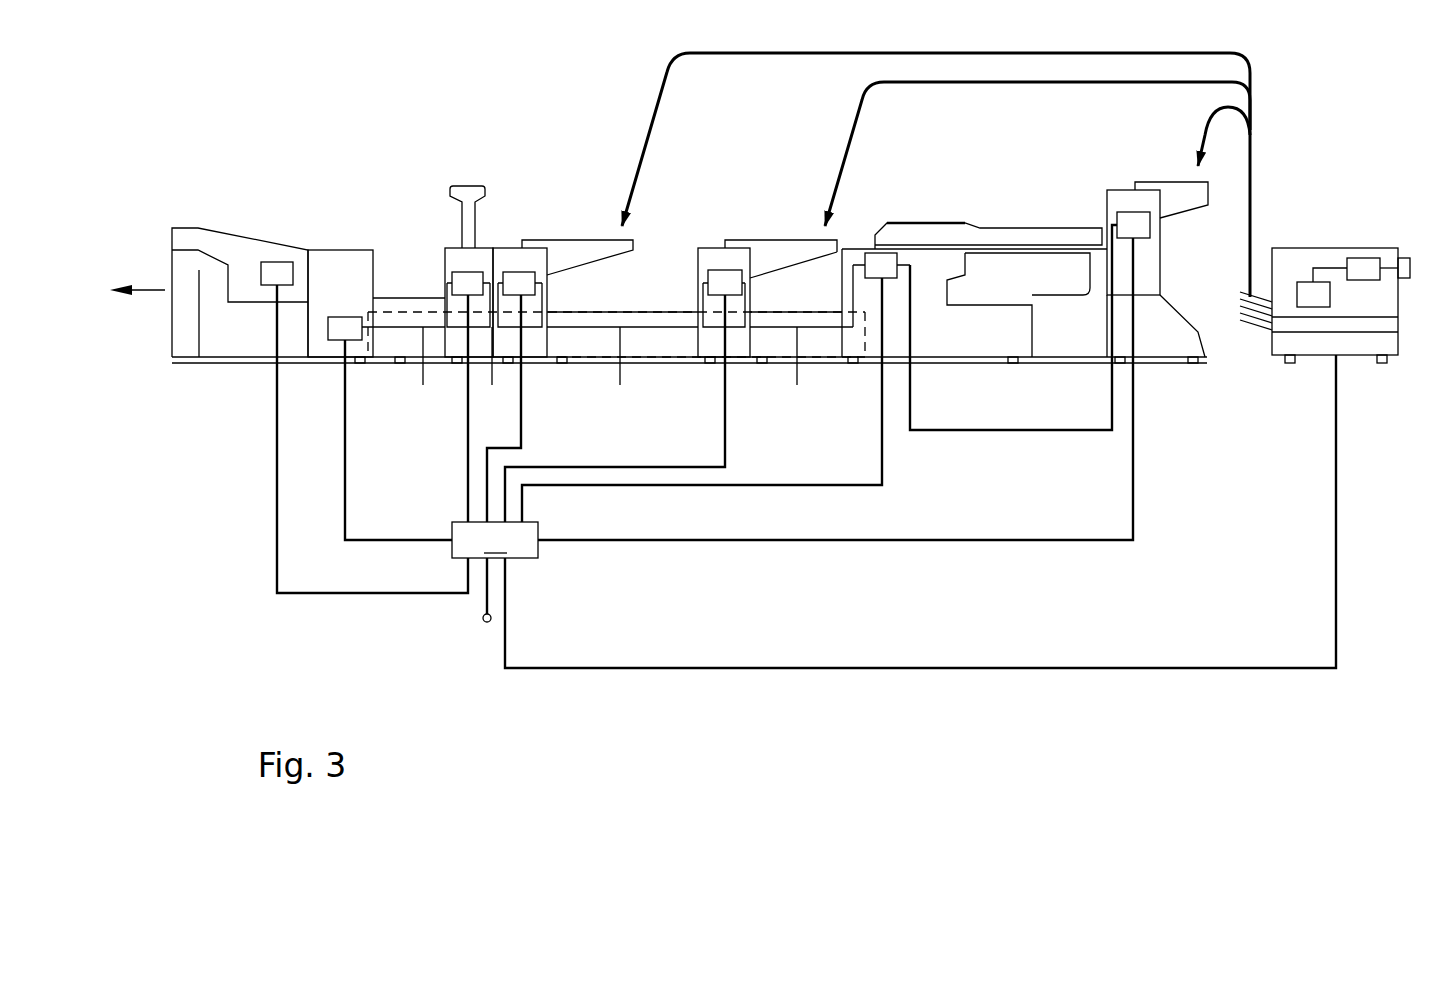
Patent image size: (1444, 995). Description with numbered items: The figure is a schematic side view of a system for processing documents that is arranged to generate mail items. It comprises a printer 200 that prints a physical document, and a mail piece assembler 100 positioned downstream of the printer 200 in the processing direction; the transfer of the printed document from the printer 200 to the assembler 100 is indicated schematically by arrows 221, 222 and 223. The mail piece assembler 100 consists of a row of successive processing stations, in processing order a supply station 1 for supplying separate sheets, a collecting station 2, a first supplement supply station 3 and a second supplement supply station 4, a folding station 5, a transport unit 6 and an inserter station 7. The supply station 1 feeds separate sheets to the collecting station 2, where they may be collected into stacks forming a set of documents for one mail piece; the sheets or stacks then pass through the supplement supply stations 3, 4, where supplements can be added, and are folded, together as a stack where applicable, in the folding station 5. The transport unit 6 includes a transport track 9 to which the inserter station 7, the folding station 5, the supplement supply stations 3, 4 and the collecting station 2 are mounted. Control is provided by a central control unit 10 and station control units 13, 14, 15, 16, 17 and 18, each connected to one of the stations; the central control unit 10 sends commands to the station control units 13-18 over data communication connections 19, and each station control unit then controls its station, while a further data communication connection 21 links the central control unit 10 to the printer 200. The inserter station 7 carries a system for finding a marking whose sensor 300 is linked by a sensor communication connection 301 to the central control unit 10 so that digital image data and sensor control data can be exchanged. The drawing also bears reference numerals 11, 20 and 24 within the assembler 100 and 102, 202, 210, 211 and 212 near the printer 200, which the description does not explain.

The supply station 1 is at (1119, 187).
The collecting station 2 is at (1006, 222).
The first supplement supply station 3 is at (714, 245).
The second supplement supply station 4 is at (511, 239).
The folding station 5 is at (491, 239).
The transport unit 6 is at (404, 295).
The inserter station 7 is at (251, 231).
The transport track 9 is at (385, 310).
The central control unit 10 is at (495, 540).
The switch 11 is at (485, 624).
The station control unit 13 is at (345, 323).
The station control unit 14 is at (462, 276).
The station control unit 15 is at (528, 280).
The station control unit 16 is at (715, 278).
The station control unit 17 is at (872, 259).
The station control unit 18 is at (1142, 232).
The data communication connection 19 is at (345, 485).
The connection 20 is at (1010, 430).
The data communication connection 21 is at (680, 668).
The guide plate 24 is at (743, 277).
The mail piece assembler 100 is at (546, 600).
The output direction 102 is at (148, 290).
The printer 200 is at (1287, 405).
The input lines 202 is at (1264, 297).
The output 210 is at (1405, 258).
The counter 211 is at (1355, 258).
The memory 212 is at (1305, 282).
The arrow 221 is at (670, 72).
The arrow 222 is at (865, 98).
The arrow 223 is at (1208, 125).
The sensor 300 is at (278, 268).
The sensor communication connection 301 is at (277, 485).